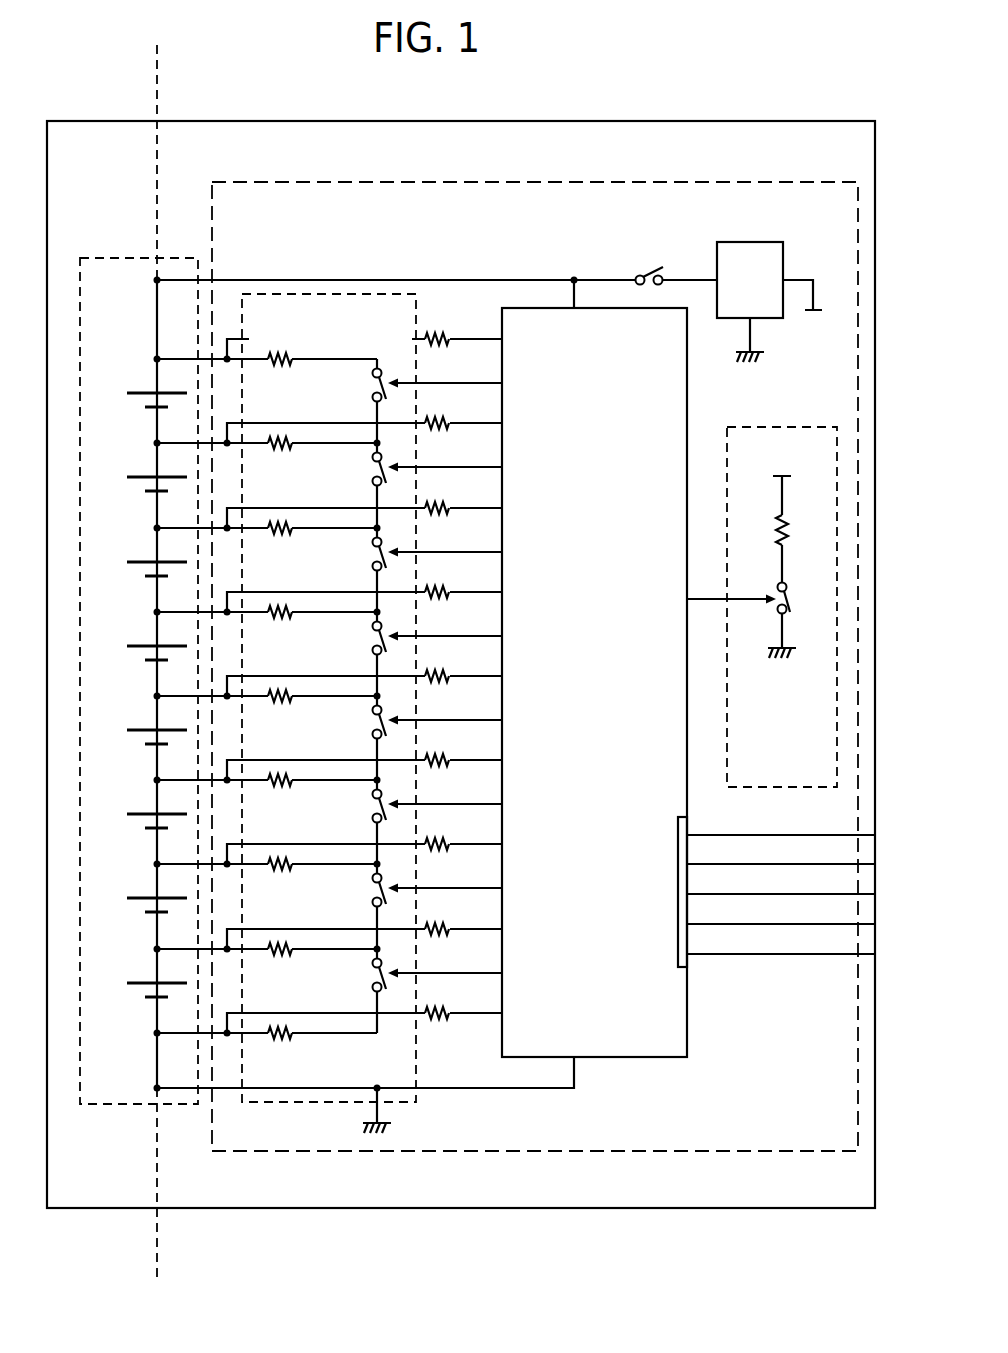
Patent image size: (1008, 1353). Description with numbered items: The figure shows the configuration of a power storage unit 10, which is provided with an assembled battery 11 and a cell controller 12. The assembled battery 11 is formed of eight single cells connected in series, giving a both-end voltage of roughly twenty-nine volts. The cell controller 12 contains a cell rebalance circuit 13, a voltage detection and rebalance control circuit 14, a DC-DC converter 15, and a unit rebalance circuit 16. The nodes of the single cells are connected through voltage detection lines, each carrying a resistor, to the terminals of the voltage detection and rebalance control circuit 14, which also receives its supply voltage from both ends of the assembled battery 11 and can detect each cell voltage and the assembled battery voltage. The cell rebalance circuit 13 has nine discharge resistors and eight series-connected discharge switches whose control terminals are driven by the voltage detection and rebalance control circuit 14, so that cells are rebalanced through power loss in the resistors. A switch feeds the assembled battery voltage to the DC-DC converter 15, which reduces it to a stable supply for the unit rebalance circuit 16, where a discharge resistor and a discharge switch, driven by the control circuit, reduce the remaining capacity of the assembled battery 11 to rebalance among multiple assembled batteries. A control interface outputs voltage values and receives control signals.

The power storage unit 10 is at (840, 121).
The assembled battery 11 is at (172, 258).
The cell controller 12 is at (818, 182).
The cell rebalance circuit 13 is at (417, 325).
The voltage detection rebalance control circuit 14 is at (687, 418).
The DC-DC converter 15 is at (765, 242).
The unit rebalance circuit 16 is at (812, 427).